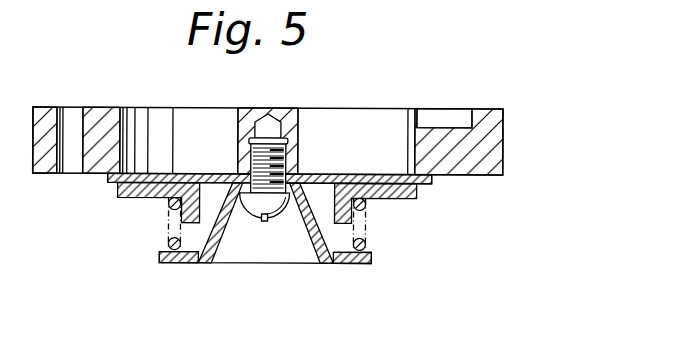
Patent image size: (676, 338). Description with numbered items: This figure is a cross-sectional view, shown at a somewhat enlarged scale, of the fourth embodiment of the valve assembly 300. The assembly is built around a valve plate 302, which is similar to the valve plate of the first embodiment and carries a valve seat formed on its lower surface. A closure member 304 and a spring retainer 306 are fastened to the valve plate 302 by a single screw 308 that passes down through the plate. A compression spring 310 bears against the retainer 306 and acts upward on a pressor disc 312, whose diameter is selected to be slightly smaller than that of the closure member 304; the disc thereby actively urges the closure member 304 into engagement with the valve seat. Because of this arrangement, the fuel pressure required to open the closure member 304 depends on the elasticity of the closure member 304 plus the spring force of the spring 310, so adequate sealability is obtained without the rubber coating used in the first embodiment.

The valve assembly 300 is at (300, 176).
The valve plate 302 is at (496, 148).
The closure member 304 is at (424, 182).
The spring retainer 306 is at (347, 261).
The screw 308 is at (256, 221).
The compression spring 310 is at (166, 240).
The pressor disc 312 is at (132, 199).